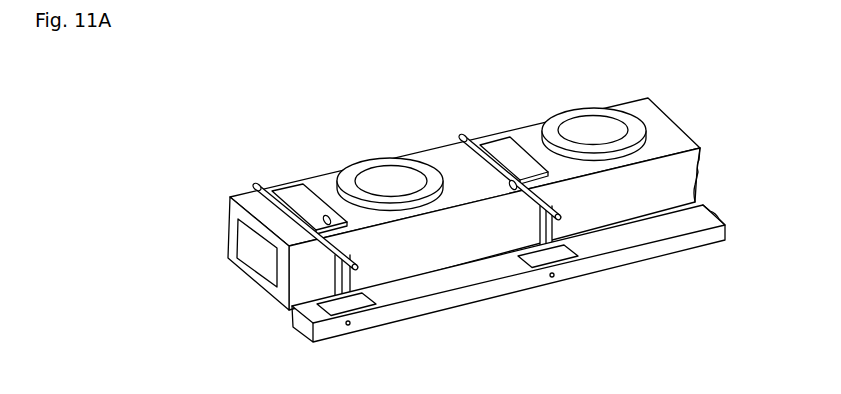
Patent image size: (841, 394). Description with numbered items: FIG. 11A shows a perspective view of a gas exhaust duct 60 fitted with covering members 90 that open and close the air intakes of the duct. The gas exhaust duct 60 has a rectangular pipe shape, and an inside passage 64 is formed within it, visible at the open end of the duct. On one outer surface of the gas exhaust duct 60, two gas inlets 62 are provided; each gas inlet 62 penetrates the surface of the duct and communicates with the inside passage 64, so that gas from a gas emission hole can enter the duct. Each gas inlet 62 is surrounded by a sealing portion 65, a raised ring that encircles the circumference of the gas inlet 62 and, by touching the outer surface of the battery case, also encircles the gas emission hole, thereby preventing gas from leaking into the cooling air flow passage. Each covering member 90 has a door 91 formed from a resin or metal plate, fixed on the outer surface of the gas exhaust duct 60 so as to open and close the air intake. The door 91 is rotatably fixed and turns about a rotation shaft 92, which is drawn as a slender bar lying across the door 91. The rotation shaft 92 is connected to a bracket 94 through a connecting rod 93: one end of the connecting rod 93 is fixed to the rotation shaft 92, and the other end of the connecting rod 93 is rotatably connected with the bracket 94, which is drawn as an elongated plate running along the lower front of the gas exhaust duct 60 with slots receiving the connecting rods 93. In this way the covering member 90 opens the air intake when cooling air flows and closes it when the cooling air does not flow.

The gas exhaust duct 60 is at (667, 118).
The gas inlet 62 is at (394, 188).
The inside passage 64 is at (253, 263).
The sealing portion 65 is at (372, 158).
The covering member 90 is at (407, 218).
The door 91 is at (297, 193).
The rotation shaft 92 is at (340, 245).
The connecting rod 93 is at (347, 278).
The bracket 94 is at (325, 332).